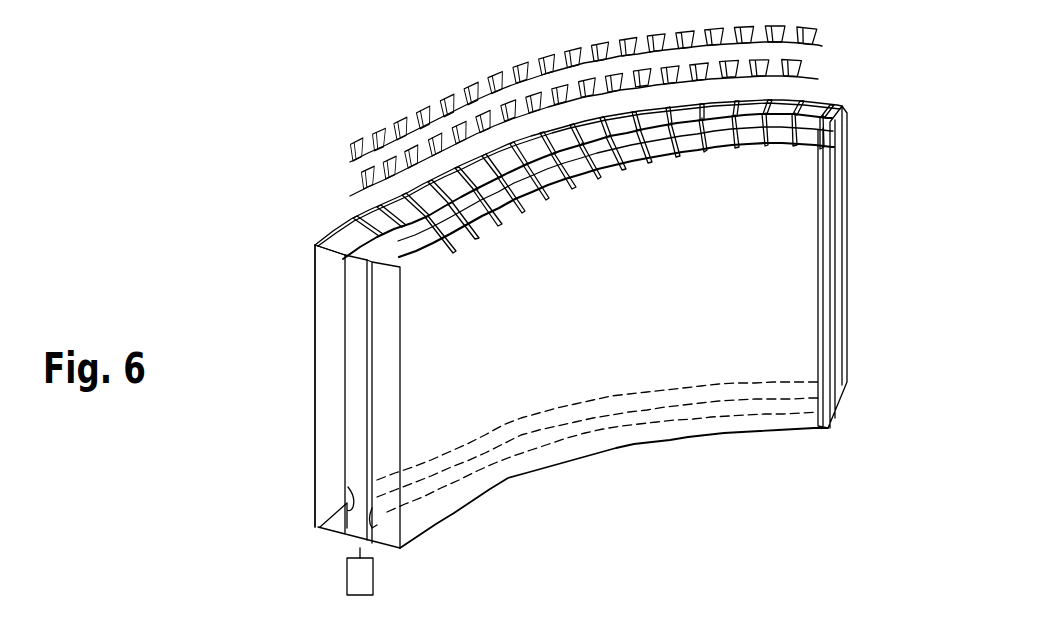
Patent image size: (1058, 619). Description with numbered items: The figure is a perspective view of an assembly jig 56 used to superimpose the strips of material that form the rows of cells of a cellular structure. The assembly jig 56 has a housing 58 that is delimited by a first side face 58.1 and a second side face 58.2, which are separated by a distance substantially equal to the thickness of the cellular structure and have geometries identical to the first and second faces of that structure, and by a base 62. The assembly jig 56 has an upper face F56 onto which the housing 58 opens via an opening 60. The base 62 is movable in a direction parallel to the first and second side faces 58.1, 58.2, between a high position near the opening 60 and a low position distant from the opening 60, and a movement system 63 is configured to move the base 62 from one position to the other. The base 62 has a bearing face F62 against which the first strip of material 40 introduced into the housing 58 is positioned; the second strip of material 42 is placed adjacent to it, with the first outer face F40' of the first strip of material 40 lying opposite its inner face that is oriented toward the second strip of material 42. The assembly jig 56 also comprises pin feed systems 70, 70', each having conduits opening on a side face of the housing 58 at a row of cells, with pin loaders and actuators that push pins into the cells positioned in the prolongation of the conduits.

The second strip of material 42 is at (810, 28).
The first strip of material 40 is at (815, 62).
The first outer face F40' is at (844, 76).
The pin feed system 70' is at (633, 179).
The pin feed system 70 is at (661, 185).
The assembly jig 56 is at (578, 342).
The bearing face F62 is at (356, 258).
The opening 60 is at (346, 256).
The upper face F56 is at (316, 244).
The base 62 is at (348, 298).
The housing 58 is at (368, 382).
The second side face 58.2 is at (348, 506).
The first side face 58.1 is at (378, 528).
The movement system 63 is at (353, 573).